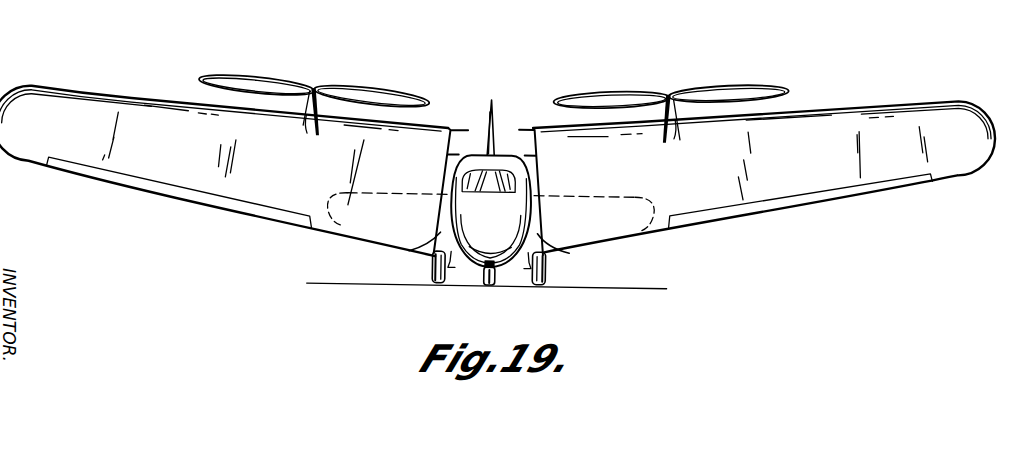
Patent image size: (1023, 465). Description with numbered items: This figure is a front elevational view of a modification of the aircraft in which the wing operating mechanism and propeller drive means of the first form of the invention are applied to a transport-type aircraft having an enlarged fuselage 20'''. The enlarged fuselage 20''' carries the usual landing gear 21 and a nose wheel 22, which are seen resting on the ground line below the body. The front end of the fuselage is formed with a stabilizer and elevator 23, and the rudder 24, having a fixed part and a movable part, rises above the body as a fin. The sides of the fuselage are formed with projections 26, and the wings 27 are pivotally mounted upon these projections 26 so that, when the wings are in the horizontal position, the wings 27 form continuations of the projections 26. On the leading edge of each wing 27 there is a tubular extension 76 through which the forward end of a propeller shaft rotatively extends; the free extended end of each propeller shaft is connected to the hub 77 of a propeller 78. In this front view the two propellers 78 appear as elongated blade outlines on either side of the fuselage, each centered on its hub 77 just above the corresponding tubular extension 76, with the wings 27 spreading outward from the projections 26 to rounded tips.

The enlarged fuselage 20''' is at (522, 212).
The landing gear 21 is at (433, 277).
The nose wheel 22 is at (490, 285).
The stabilizer and elevator 23 is at (416, 250).
The rudder 24 is at (494, 108).
The projections 26 is at (452, 157).
The wings 27 is at (103, 118).
The tubular extensions 76 is at (304, 130).
The hubs 77 is at (312, 91).
The propellers 78 is at (386, 95).